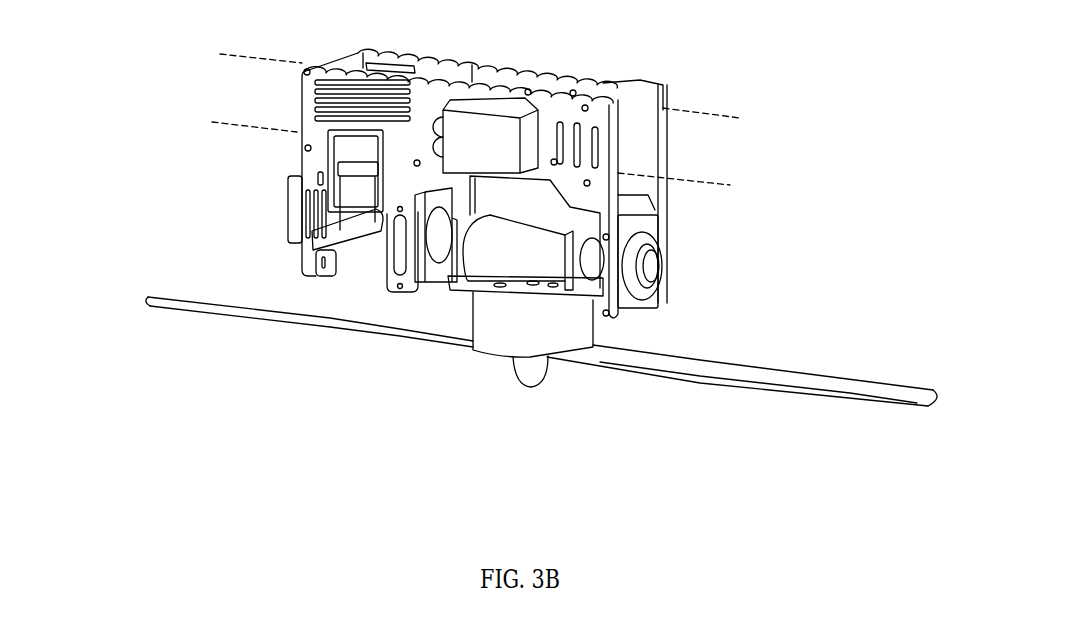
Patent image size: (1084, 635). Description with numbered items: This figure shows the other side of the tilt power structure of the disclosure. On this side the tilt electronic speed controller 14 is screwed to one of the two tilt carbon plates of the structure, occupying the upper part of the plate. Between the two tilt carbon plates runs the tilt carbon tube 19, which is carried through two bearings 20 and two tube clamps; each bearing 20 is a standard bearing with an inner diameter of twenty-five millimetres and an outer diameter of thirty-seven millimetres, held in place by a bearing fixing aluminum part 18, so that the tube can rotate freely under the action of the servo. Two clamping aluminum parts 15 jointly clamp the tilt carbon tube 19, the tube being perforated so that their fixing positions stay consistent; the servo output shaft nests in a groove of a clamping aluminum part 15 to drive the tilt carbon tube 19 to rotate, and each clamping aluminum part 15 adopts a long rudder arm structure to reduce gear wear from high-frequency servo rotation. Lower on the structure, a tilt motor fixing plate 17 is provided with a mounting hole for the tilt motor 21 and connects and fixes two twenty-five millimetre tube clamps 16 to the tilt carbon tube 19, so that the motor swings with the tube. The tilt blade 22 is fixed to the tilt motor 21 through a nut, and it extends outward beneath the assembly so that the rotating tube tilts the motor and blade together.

The tilt electronic speed controller 14 is at (540, 140).
The clamping aluminum part 15 is at (330, 246).
The 25 mm tube clamp 16 is at (455, 250).
The tilt motor fixing plate 17 is at (450, 289).
The bearing fixing aluminum part 18 is at (663, 220).
The tilt carbon tube 19 is at (662, 268).
The bearing 20 is at (637, 300).
The tilt motor 21 is at (563, 315).
The tilt blade 22 is at (548, 360).